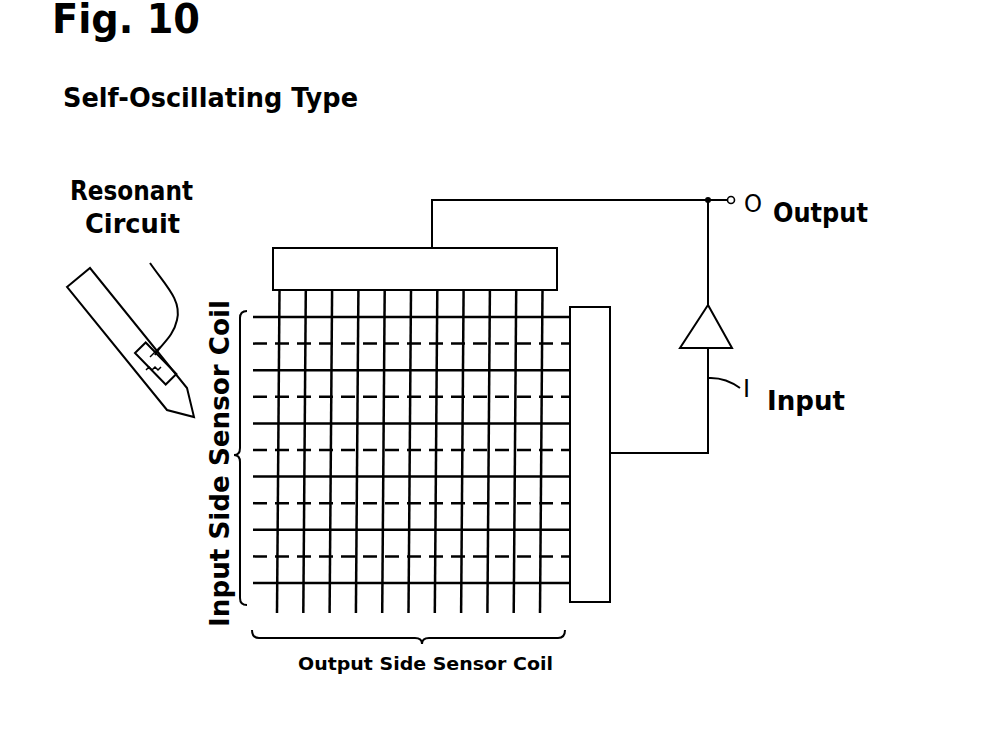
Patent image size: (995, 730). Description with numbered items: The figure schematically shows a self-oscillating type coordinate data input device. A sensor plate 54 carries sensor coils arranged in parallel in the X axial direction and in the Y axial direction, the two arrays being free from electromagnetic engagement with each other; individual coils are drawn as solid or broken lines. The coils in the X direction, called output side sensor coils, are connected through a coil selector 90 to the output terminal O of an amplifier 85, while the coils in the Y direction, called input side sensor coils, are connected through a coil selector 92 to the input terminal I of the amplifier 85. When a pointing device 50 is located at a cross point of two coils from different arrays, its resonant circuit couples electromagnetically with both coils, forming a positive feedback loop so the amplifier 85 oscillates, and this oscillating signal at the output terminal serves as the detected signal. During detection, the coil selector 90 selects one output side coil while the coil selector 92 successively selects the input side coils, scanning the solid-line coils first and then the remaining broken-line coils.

The pointing device 50 is at (125, 357).
The sensor plate 54 is at (287, 548).
The amplifier 85 is at (722, 331).
The coil selector 90 is at (273, 268).
The coil selector 92 is at (588, 602).